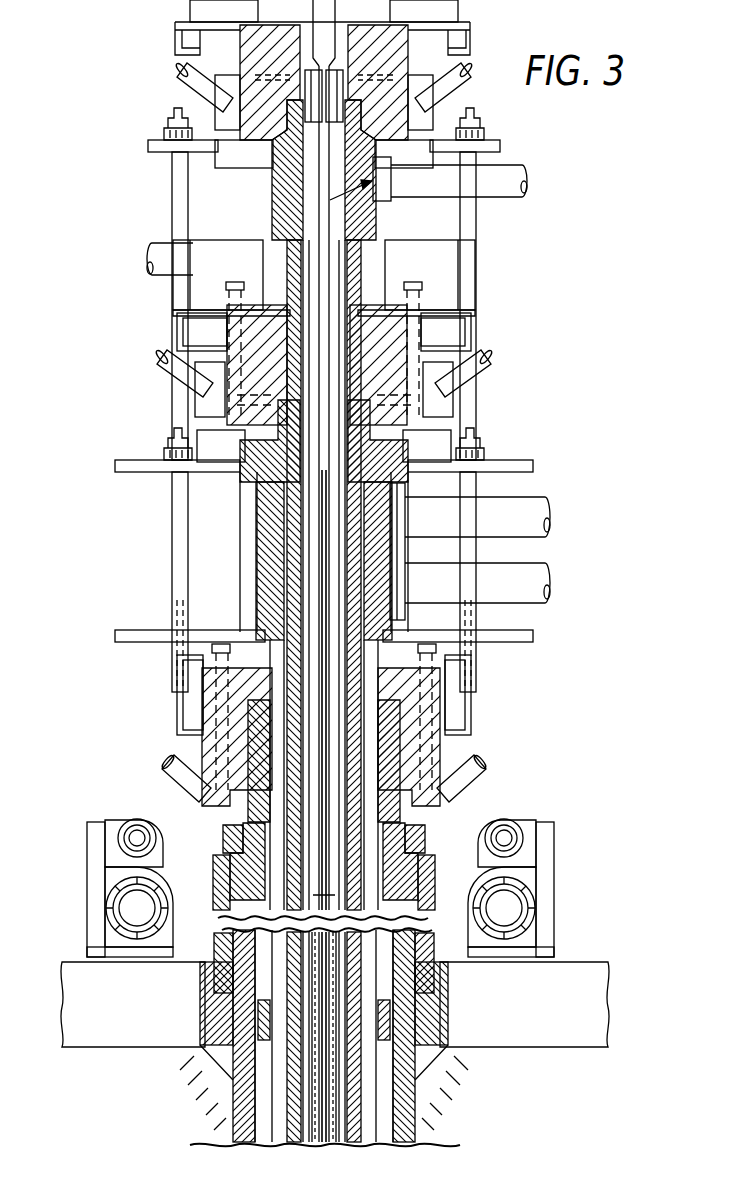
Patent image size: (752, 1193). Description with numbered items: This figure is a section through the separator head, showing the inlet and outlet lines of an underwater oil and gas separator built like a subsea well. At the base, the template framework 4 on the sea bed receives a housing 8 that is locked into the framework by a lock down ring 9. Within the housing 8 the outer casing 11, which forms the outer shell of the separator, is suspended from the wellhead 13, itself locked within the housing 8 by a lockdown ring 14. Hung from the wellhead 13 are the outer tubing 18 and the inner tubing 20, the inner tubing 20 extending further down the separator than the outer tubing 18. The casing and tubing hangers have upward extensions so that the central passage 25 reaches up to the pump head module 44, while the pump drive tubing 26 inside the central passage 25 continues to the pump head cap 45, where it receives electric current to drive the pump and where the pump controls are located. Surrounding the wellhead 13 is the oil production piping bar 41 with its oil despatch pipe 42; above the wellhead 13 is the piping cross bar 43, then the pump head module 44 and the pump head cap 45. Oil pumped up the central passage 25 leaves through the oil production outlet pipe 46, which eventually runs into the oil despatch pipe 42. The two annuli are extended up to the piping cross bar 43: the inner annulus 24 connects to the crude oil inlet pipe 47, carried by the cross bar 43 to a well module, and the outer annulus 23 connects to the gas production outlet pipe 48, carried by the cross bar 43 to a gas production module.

The template framework 4 is at (583, 993).
The housing 8 is at (242, 1065).
The lock down ring 9 is at (223, 955).
The outer casing 11 is at (370, 1077).
The wellhead 13 is at (390, 797).
The lockdown ring 14 is at (217, 893).
The outer tubing 18 is at (347, 1093).
The inner tubing 20 is at (333, 1128).
The outer annulus 23 is at (370, 692).
The inner annulus 24 is at (345, 720).
The central passage 25 is at (330, 752).
The pump drive tubing 26 is at (323, 182).
The oil production piping bar 41 is at (567, 877).
The oil despatch pipe 42 is at (110, 908).
The piping cross bar 43 is at (157, 702).
The pump head module 44 is at (160, 327).
The pump head cap 45 is at (152, 65).
The oil production outlet pipe 46 is at (490, 180).
The crude oil inlet pipe 47 is at (515, 512).
The gas production outlet pipe 48 is at (525, 582).